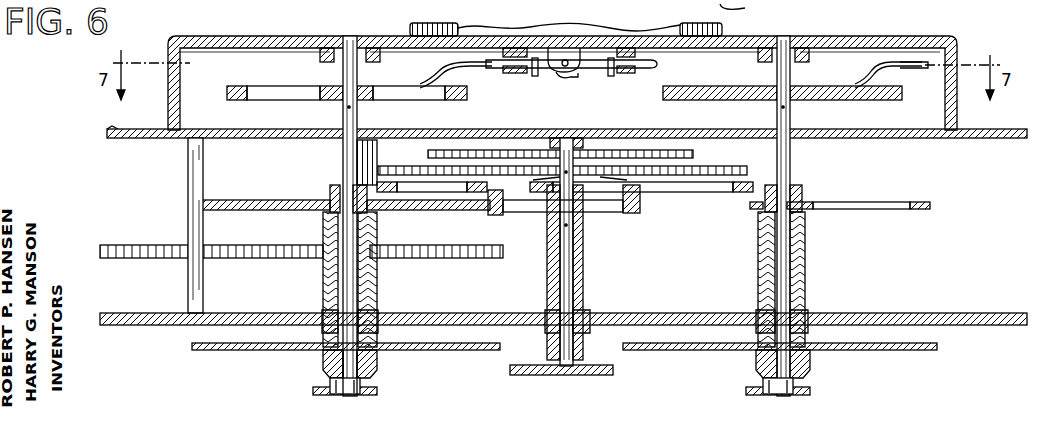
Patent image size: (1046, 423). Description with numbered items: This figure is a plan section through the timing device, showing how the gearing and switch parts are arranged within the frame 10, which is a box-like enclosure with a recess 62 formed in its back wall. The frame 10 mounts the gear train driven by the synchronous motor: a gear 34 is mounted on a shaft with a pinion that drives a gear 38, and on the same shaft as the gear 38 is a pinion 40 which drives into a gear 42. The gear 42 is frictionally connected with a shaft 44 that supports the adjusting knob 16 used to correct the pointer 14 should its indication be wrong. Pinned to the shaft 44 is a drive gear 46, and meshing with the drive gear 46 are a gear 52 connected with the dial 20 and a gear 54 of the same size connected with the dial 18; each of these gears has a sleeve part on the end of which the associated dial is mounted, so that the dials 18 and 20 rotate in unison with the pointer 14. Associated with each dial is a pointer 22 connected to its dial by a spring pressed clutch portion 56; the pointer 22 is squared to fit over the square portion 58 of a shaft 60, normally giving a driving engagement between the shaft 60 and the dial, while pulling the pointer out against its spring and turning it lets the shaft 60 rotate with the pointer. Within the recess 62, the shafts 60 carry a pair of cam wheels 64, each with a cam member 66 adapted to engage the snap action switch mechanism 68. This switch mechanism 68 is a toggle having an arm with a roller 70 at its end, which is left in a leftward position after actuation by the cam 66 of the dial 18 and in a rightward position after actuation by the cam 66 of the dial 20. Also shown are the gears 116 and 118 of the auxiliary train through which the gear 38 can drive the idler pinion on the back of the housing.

The frame 10 is at (110, 130).
The pointer 14 is at (750, 11).
The adjusting knob 16 is at (560, 375).
The dial 18 is at (412, 350).
The dial 20 is at (910, 350).
The pointer 22 is at (320, 378).
The gear 34 is at (693, 155).
The gear 38 is at (747, 170).
The pinion 40 is at (400, 145).
The gear 42 is at (707, 190).
The shaft 44 is at (580, 284).
The drive gear 46 is at (640, 215).
The gear 52 is at (306, 182).
The gear 54 is at (930, 205).
The spring pressed clutch portion 56 is at (322, 356).
The square portion 58 is at (370, 378).
The shaft 60 is at (360, 296).
The recess 62 is at (957, 40).
The cam wheel 64 is at (467, 96).
The cam member 66 is at (420, 82).
The snap action switch mechanism 68 is at (590, 70).
The roller 70 is at (558, 78).
The gear 116 is at (118, 258).
The gear 118 is at (462, 258).